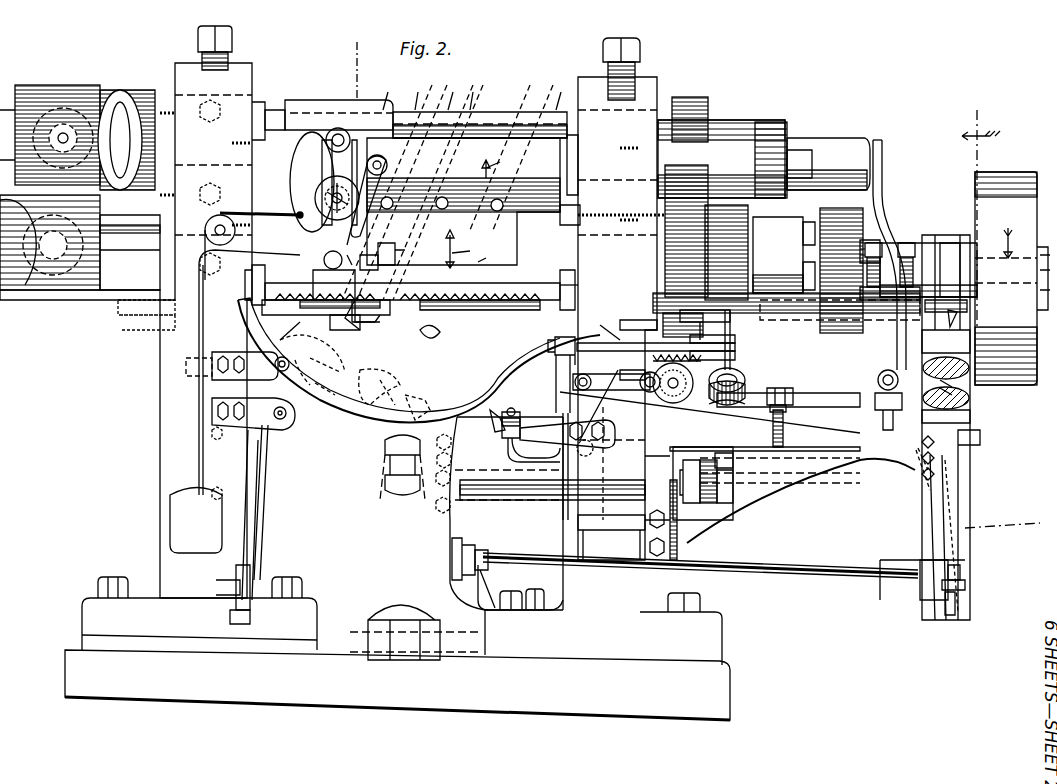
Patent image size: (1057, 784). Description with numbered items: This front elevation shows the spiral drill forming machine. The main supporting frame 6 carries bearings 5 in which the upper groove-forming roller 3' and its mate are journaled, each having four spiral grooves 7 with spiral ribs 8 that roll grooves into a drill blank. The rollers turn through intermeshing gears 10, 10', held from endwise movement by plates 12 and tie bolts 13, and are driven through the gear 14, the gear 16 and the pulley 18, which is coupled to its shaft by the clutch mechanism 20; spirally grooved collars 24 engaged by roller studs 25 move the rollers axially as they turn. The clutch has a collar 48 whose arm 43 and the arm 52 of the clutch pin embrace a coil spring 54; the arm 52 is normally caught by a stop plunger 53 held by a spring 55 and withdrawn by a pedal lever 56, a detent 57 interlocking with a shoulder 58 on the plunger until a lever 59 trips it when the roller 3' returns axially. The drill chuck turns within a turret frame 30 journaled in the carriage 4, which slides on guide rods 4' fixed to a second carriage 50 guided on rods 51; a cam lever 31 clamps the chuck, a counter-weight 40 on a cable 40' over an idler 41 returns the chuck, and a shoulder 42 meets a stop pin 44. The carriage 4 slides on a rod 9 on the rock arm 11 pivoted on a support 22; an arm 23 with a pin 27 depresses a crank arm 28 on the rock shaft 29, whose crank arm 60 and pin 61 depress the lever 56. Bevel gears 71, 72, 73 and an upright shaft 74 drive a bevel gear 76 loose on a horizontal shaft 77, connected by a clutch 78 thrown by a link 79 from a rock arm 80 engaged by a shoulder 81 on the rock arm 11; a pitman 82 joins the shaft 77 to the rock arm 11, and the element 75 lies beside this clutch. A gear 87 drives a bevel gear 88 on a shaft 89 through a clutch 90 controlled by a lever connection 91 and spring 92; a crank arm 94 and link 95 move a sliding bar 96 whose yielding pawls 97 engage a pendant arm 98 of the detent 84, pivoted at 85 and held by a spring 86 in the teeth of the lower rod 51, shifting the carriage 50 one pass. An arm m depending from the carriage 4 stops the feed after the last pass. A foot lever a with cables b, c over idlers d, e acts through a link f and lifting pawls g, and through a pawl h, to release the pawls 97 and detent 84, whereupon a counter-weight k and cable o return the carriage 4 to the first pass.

The groove-forming roller 3' is at (460, 184).
The carriage 4 is at (314, 152).
The guide rods 4' is at (323, 212).
The bearings 5 is at (198, 132).
The main supporting frame 6 is at (172, 662).
The spiral grooves 7 is at (472, 88).
The spiral ribs 8 is at (445, 88).
The rod 9 is at (345, 436).
The gear 10 is at (707, 274).
The gear 10' is at (705, 110).
The rock arm 11 is at (365, 510).
The plates 12 is at (778, 128).
The tie bolts 13 is at (728, 155).
The gear 14 is at (735, 258).
The gear 16 is at (848, 333).
The pulley 18 is at (1008, 178).
The clutch mechanism 20 is at (955, 330).
The support 22 is at (398, 640).
The rearwardly projecting arm 23 is at (464, 546).
The spirally grooved collars 24 is at (112, 88).
The roller studs 25 is at (48, 90).
The laterally projecting pin 27 is at (476, 580).
The crank arm 28 is at (490, 556).
The rock shaft 29 is at (600, 566).
The turret frame 30 is at (362, 253).
The cam lever 31 is at (362, 229).
The counter-weight 40 is at (408, 252).
The cable 40' is at (394, 243).
The idler 41 is at (390, 162).
The shoulder 42 is at (316, 218).
The laterally projecting arm 43 is at (952, 276).
The stop pin 44 is at (315, 186).
The collar 48 is at (938, 245).
The second carriage 50 is at (300, 100).
The rods 51 is at (534, 302).
The laterally projecting arm 52 is at (930, 340).
The stop plunger 53 is at (478, 306).
The coil spring 54 is at (940, 310).
The spring 55 is at (968, 385).
The pedal lever 56 is at (960, 572).
The detent 57 is at (908, 484).
The shoulder 58 is at (936, 474).
The lever 59 is at (882, 192).
The crank arm 60 is at (932, 590).
The laterally extending pin 61 is at (962, 588).
The bevel gear 71 is at (785, 392).
The idler 72 is at (726, 340).
The bevel gear 73 is at (740, 418).
The upright shaft 74 is at (735, 460).
The bevel gear 75 is at (735, 470).
The bevel gear 76 is at (725, 490).
The horizontal shaft 77 is at (516, 484).
The clutch 78 is at (708, 505).
The link 79 is at (508, 450).
The rock arm 80 is at (516, 410).
The shoulder 81 is at (492, 420).
The pitman 82 is at (402, 480).
The detent 84 is at (312, 343).
The pivot 85 is at (344, 324).
The spring 86 is at (388, 305).
The gear 87 is at (673, 390).
The bevel gear 88 is at (645, 392).
The shaft 89 is at (608, 440).
The clutch 90 is at (552, 348).
The lever and link connection 91 is at (640, 345).
The spring 92 is at (660, 372).
The crank arm 94 is at (722, 412).
The link 95 is at (600, 377).
The sliding bar 96 is at (419, 360).
The yielding pawls 97 is at (425, 368).
The pendant arm 98 is at (290, 357).
The foot lever a is at (250, 615).
The cable b is at (262, 482).
The cable c is at (254, 443).
The idler d is at (268, 520).
The idler e is at (256, 380).
The link f is at (383, 420).
The lifting pawls g is at (416, 410).
The pawl h is at (430, 343).
The counter-weight k is at (172, 506).
The arm m is at (366, 326).
The cable o is at (199, 342).